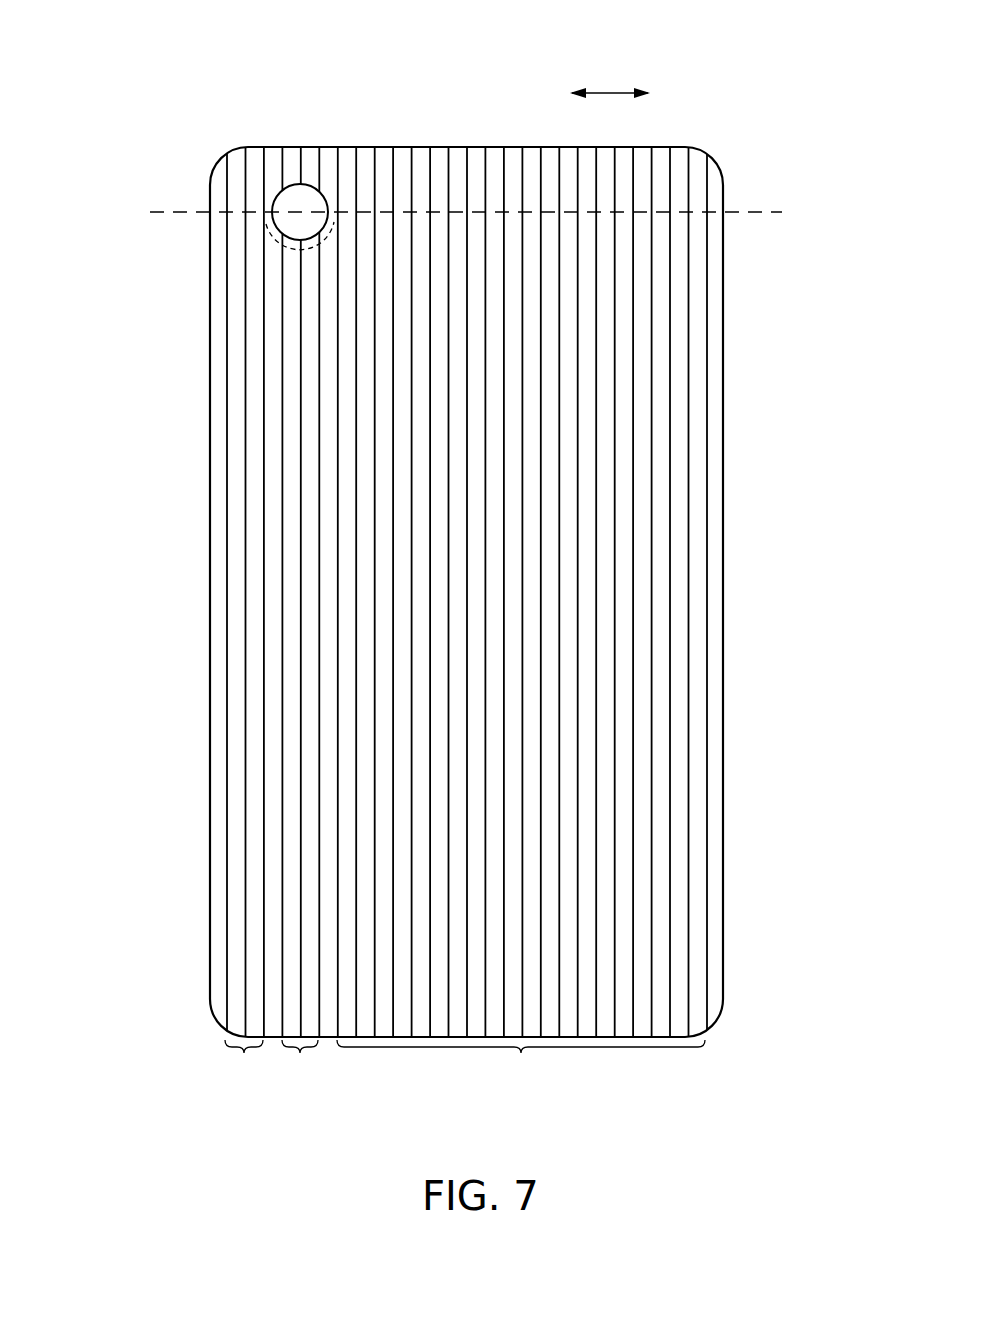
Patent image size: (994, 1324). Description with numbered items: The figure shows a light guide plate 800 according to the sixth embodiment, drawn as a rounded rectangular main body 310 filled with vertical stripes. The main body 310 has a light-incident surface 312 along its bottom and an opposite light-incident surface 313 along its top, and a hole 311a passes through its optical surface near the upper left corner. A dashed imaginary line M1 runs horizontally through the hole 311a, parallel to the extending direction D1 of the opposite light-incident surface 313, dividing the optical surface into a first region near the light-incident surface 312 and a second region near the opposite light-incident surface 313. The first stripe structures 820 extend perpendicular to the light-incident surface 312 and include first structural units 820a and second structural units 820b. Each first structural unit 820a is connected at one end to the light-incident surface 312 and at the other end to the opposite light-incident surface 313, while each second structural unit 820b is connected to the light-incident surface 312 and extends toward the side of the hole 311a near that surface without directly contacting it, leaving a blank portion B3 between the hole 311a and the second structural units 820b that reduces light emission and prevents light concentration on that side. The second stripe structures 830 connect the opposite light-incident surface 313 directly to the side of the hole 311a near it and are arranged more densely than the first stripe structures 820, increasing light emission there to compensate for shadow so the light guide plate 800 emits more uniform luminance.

The light guide plate 800 is at (95, 28).
The main body 310 is at (187, 740).
The hole 311a is at (285, 208).
The light-incident surface 312 is at (660, 1037).
The opposite light-incident surface 313 is at (452, 147).
The first stripe structures 820 is at (240, 947).
The first structural units 820a is at (243, 1053).
The second structural units 820b is at (304, 1064).
The second stripe structures 830 is at (300, 160).
The blank portion B3 is at (273, 236).
The imaginary line M1 is at (742, 212).
The extending direction D1 is at (610, 78).